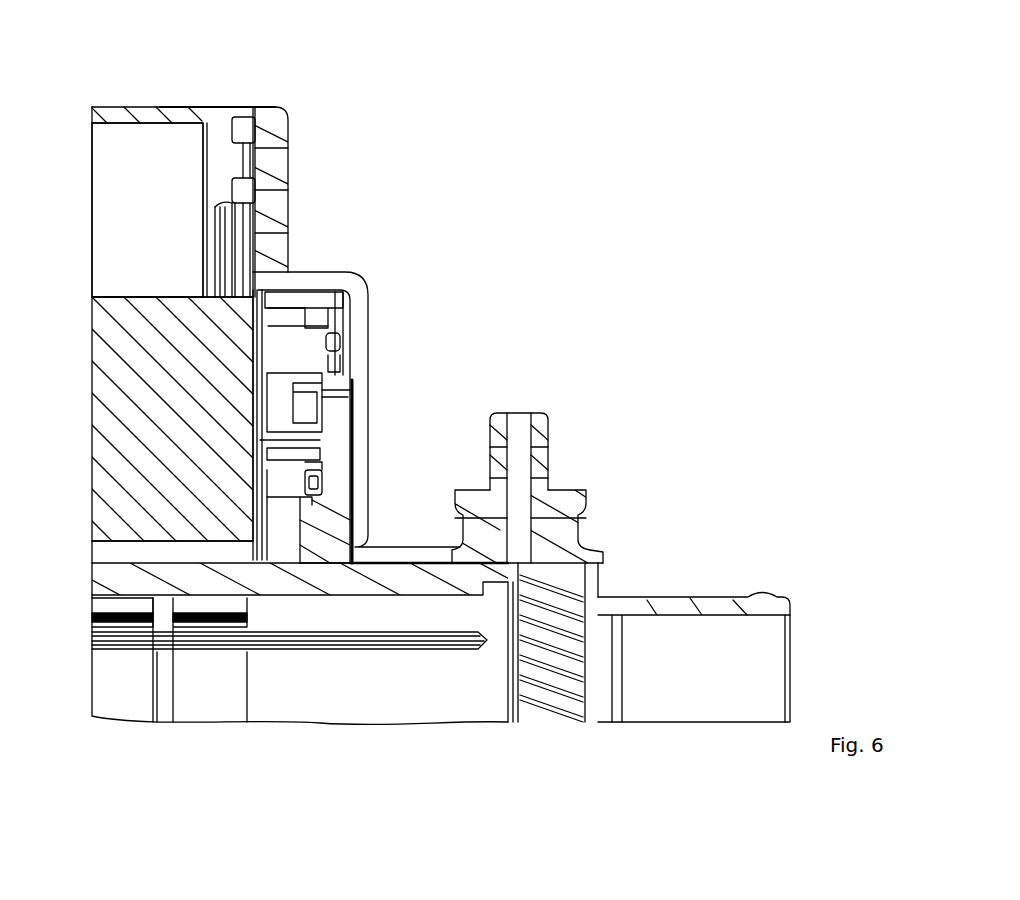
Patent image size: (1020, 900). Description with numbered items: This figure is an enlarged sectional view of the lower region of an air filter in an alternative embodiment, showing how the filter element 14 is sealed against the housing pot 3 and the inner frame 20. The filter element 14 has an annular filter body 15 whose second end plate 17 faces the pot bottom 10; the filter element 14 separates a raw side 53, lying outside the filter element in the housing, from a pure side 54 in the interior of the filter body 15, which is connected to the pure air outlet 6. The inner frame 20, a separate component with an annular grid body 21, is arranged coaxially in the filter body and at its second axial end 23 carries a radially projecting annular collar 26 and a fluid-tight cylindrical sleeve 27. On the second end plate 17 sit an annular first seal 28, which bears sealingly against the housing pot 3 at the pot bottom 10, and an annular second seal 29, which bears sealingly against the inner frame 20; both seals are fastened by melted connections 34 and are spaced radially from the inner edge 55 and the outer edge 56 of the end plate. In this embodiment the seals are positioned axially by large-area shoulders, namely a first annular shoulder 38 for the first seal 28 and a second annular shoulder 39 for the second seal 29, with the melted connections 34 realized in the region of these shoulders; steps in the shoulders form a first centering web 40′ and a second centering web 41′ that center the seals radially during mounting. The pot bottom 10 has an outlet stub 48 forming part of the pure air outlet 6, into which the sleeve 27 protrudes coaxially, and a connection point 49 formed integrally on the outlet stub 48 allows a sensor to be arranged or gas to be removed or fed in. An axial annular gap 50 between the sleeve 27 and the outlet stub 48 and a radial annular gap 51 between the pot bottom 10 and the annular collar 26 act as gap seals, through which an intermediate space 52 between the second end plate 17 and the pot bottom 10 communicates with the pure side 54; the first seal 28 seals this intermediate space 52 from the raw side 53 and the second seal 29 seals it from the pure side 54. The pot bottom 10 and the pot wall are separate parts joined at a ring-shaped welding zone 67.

The housing pot 3 is at (186, 108).
The pure air outlet 6 is at (697, 597).
The pot bottom 10 is at (288, 178).
The filter element 14 is at (152, 297).
The filter body 15 is at (120, 330).
The second end plate 17 is at (265, 330).
The inner frame 20 is at (127, 601).
The grid body 21 is at (208, 588).
The second axial end 23 is at (290, 580).
The annular collar 26 is at (318, 530).
The cylindrical sleeve 27 is at (377, 583).
The first seal 28 is at (300, 347).
The second seal 29 is at (300, 488).
The melted connection 34 is at (330, 368).
The first annular shoulder 38 is at (343, 342).
The second annular shoulder 39 is at (323, 478).
The first centering web 40′ is at (348, 302).
The second centering web 41′ is at (325, 463).
The outlet stub 48 is at (437, 548).
The connection point 49 is at (550, 447).
The axial annular gap 50 is at (427, 565).
The radial annular gap 51 is at (355, 412).
The intermediate space 52 is at (290, 396).
The raw side 53 is at (163, 181).
The pure side 54 is at (356, 688).
The inner edge 55 is at (254, 568).
The outer edge 56 is at (258, 292).
The welding zone 67 is at (243, 162).